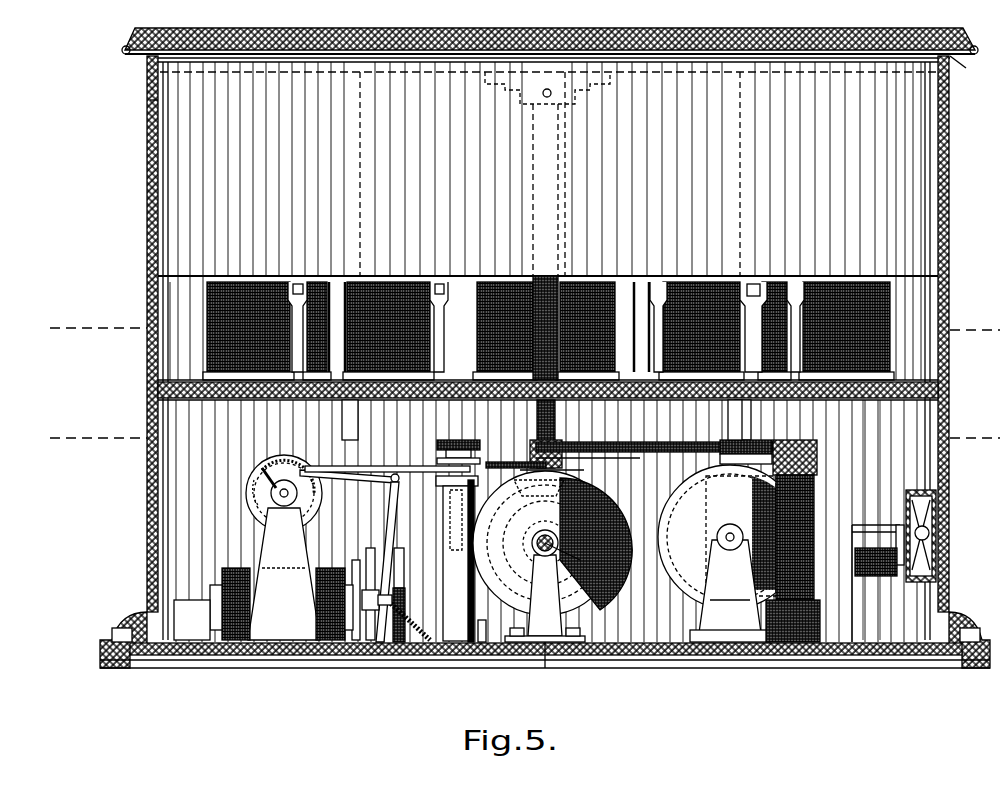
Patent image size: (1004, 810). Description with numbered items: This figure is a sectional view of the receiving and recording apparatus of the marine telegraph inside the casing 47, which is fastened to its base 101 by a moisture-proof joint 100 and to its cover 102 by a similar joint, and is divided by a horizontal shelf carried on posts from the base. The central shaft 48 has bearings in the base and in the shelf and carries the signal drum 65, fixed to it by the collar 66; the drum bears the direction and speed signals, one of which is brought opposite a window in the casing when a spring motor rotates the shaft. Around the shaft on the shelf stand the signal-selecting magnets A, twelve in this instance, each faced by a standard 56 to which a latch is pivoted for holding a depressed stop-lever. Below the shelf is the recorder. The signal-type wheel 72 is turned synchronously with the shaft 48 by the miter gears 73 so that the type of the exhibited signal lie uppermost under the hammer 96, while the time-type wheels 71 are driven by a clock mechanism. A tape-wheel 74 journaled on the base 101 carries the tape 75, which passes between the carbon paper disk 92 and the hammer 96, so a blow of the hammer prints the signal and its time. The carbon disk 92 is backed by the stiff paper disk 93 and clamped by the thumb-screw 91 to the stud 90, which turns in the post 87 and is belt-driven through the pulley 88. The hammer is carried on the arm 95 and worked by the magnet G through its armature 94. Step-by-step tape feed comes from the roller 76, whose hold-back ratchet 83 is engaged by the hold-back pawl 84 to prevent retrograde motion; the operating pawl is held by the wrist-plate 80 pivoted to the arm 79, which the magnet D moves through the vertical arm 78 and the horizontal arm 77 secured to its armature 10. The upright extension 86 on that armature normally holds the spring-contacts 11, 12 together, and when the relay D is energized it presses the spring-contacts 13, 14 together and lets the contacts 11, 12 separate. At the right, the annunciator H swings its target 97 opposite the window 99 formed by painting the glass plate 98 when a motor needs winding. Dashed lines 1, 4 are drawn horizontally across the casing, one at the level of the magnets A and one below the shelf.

The section line 1 is at (516, 329).
The section line 4 is at (516, 439).
The armature 10 is at (345, 625).
The spring-contact 11 is at (402, 546).
The spring-contact 12 is at (402, 556).
The spring-contact 13 is at (372, 548).
The spring-contact 14 is at (366, 550).
The casing 47 is at (150, 352).
The central shaft 48 is at (556, 440).
The standard 56 is at (338, 323).
The signal drum 65 is at (180, 247).
The collar 66 is at (573, 68).
The time-type wheels 71 is at (586, 545).
The signal-type wheel 72 is at (594, 512).
The miter gears 73 is at (522, 470).
The tape-wheel 74 is at (731, 553).
The tape 75 is at (655, 481).
The roller 76 is at (262, 462).
The horizontal arm 77 is at (392, 640).
The vertical arm 78 is at (392, 518).
The arm 79 is at (365, 480).
The wrist-plate 80 is at (290, 458).
The hold-back ratchet 83 is at (256, 500).
The hold-back pawl 84 is at (258, 472).
The upright extension 86 is at (402, 578).
The post 87 is at (491, 625).
The pulley 88 is at (482, 558).
The stud 90 is at (452, 482).
The thumb-screw 91 is at (452, 440).
The carbon paper disk 92 is at (582, 472).
The stiff paper disk 93 is at (412, 466).
The armature 94 is at (772, 448).
The arm 95 is at (636, 446).
The hammer 96 is at (560, 460).
The target 97 is at (900, 528).
The glass plate 98 is at (940, 500).
The window 99 is at (930, 534).
The moisture-proof joint 100 is at (150, 664).
The base 101 is at (800, 662).
The cover 102 is at (752, 44).
The signal-selecting magnets A is at (890, 330).
The magnet D is at (248, 668).
The magnet G is at (816, 510).
The annunciator magnets H is at (876, 576).